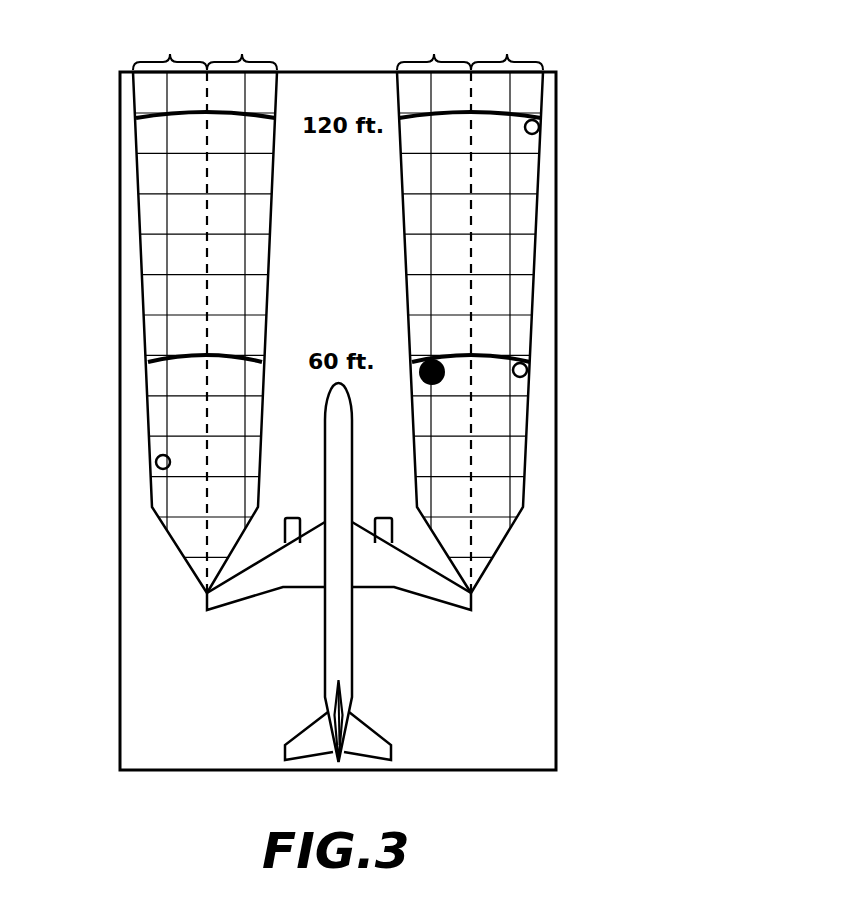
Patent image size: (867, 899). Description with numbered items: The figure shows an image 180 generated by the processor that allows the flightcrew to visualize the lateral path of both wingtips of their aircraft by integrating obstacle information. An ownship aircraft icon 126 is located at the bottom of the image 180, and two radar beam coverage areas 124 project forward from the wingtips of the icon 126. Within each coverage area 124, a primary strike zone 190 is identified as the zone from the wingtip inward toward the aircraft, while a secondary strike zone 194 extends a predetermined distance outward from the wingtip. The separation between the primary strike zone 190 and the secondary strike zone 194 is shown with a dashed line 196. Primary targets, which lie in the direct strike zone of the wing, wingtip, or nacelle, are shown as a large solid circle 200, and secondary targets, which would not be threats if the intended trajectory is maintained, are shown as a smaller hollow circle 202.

The image 180 is at (676, 62).
The radar beam coverage area 124 is at (147, 405).
The dashed line 196 is at (207, 300).
The secondary strike zone 194 is at (338, 50).
The primary strike zone 190 is at (339, 50).
The hollow circle 202 is at (539, 129).
The solid circle 200 is at (445, 375).
The ownship aircraft icon 126 is at (337, 632).